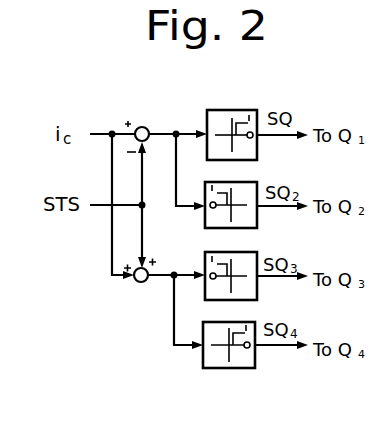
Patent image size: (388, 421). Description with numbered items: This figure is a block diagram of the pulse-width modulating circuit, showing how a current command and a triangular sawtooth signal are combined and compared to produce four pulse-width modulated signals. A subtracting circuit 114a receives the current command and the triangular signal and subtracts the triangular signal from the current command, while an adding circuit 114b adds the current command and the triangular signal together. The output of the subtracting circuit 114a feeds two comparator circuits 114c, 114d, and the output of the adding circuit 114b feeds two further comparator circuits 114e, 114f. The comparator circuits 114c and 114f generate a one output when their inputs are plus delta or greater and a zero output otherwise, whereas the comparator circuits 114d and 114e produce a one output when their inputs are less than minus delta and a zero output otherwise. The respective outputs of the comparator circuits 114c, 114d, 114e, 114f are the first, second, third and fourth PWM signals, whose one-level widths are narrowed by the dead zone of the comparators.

The subtracting circuit 114a is at (150, 127).
The adding circuit 114b is at (141, 283).
The comparator circuit 114c is at (252, 110).
The comparator circuit 114d is at (258, 182).
The comparator circuit 114e is at (257, 252).
The comparator circuit 114f is at (255, 322).